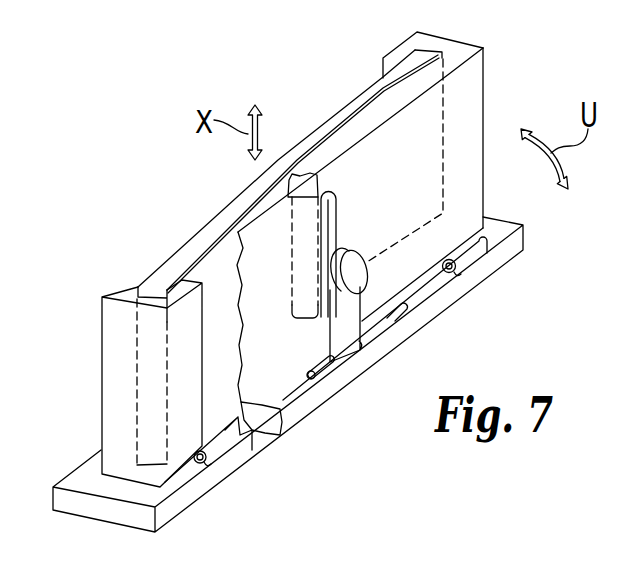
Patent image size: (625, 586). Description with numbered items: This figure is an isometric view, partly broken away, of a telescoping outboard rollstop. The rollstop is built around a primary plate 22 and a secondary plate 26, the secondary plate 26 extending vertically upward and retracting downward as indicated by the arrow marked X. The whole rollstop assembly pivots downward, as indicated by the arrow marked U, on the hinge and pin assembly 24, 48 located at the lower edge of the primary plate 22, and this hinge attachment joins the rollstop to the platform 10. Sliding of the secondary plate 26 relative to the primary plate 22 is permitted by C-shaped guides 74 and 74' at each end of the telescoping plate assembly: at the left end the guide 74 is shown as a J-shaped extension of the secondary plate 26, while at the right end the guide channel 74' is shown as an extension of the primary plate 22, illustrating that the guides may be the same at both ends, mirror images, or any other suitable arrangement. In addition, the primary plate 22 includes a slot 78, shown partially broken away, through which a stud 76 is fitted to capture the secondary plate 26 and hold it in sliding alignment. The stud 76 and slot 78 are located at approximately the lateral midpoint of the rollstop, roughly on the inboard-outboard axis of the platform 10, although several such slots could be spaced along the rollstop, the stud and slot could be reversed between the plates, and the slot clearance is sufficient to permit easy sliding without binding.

The platform 10 is at (491, 264).
The primary plate 22 is at (470, 98).
The hinge 24 is at (372, 331).
The secondary plate 26 is at (183, 242).
The pin 48 is at (329, 366).
The C-shaped guide 74 is at (146, 351).
The guide channel 74' is at (433, 39).
The stud 76 is at (362, 266).
The slot 78 is at (338, 218).